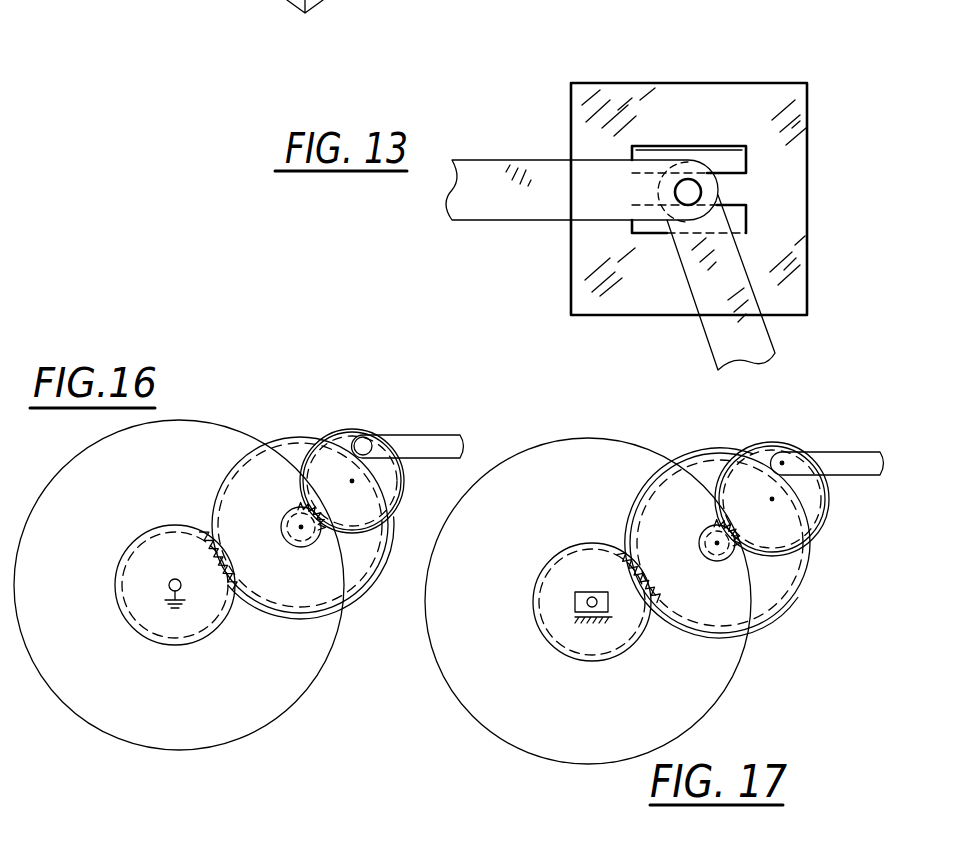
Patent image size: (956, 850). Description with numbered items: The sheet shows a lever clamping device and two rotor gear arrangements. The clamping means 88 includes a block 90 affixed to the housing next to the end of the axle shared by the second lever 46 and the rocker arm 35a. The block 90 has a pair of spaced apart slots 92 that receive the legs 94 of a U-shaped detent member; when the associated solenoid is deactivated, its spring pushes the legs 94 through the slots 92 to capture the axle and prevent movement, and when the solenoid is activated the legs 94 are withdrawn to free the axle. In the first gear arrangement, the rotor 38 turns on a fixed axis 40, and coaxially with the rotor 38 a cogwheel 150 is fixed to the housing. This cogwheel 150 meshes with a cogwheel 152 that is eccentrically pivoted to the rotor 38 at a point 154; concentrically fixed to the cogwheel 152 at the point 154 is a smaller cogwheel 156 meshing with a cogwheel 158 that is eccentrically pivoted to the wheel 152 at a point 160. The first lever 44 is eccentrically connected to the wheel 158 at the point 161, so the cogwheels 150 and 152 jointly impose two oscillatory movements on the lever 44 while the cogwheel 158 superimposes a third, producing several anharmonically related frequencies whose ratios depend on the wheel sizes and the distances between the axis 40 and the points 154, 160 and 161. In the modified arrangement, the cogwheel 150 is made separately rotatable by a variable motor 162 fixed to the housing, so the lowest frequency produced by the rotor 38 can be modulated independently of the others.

In FIG. 13, the clamping means 88 is at (709, 183).
In FIG. 13, the block 90 is at (803, 137).
In FIG. 13, the slots 92 is at (733, 148).
In FIG. 13, the legs 94 is at (653, 157).
In FIG. 13, the rocker arm 35a is at (582, 192).
In FIG. 13, the second lever 46 is at (712, 334).
In FIG. 16, the rotor 38 is at (87, 710).
In FIG. 17, the rotor 38 is at (468, 698).
In FIG. 16, the fixed axis 40 is at (167, 592).
In FIG. 16, the first lever 44 is at (408, 428).
In FIG. 17, the first lever 44 is at (843, 453).
In FIG. 16, the cogwheel 150 is at (207, 608).
In FIG. 17, the cogwheel 150 is at (631, 630).
In FIG. 16, the cogwheel 152 is at (347, 582).
In FIG. 17, the cogwheel 152 is at (785, 570).
In FIG. 16, the pivot point 154 is at (300, 526).
In FIG. 16, the smaller cogwheel 156 is at (269, 470).
In FIG. 17, the smaller cogwheel 156 is at (730, 561).
In FIG. 16, the cogwheel 158 is at (374, 465).
In FIG. 17, the cogwheel 158 is at (815, 500).
In FIG. 16, the pivot point 160 is at (352, 479).
In FIG. 16, the connection point 161 is at (366, 440).
In FIG. 17, the variable motor 162 is at (567, 607).